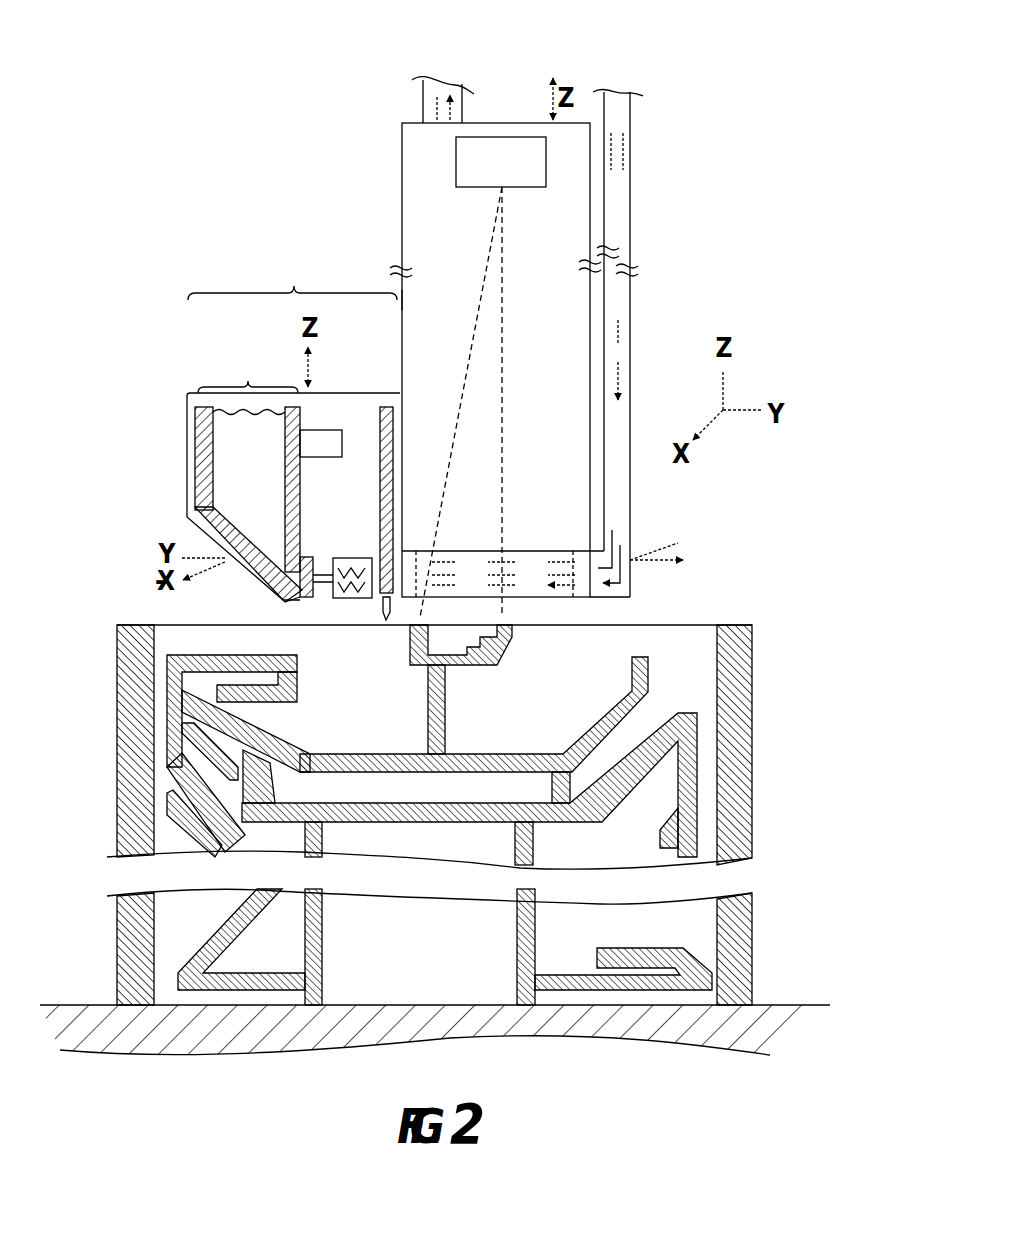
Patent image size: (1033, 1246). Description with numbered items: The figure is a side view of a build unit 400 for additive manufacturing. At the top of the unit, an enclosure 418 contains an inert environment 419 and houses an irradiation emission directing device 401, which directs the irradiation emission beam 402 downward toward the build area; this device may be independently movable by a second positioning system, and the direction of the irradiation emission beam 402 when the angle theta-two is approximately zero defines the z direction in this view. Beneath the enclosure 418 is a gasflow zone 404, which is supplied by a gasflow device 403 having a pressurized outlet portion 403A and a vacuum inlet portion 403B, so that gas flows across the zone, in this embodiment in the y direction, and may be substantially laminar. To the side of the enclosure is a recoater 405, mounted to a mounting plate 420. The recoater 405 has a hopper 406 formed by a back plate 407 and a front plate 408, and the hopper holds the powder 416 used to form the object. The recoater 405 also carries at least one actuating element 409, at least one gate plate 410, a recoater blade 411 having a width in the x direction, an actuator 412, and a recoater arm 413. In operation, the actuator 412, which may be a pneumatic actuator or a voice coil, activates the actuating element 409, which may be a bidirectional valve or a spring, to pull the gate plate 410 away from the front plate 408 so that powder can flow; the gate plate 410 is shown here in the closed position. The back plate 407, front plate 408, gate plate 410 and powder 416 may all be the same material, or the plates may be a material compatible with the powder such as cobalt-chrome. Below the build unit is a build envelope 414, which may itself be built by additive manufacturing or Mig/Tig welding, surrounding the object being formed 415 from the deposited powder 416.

The build unit 400 is at (675, 84).
The irradiation emission directing device 401 is at (500, 137).
The energy beam 402 is at (502, 297).
The gasflow device 403 is at (562, 597).
The pressurized outlet portion 403A is at (583, 560).
The vacuum inlet portion 403B is at (408, 560).
The gasflow zone 404 is at (527, 560).
The recoater 405 is at (292, 275).
The hopper 406 is at (248, 369).
The back plate 407 is at (195, 450).
The front plate 408 is at (302, 425).
The actuating element 409 is at (304, 568).
The gate plate 410 is at (288, 600).
The recoater blade 411 is at (378, 600).
The actuator 412 is at (352, 558).
The recoater arm 413 is at (385, 407).
The build envelope 414 is at (752, 766).
The object being formed 415 is at (648, 668).
The powder 416 is at (228, 408).
The enclosure 418 is at (401, 195).
The inert environment 419 is at (420, 300).
The mounting plate 420 is at (186, 422).